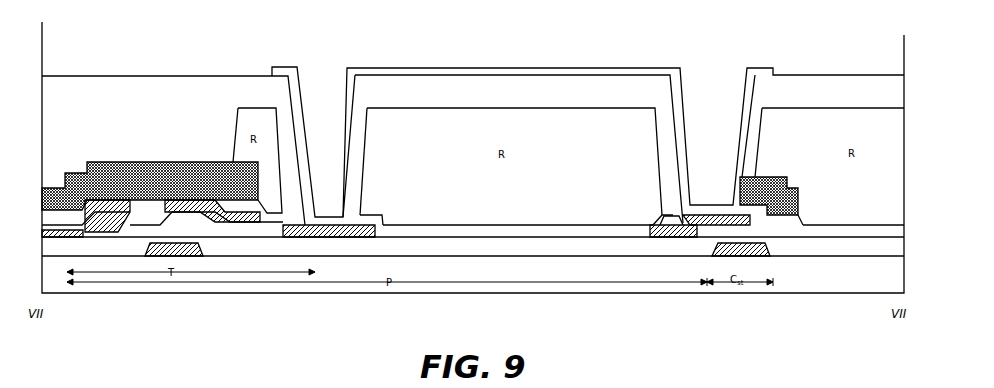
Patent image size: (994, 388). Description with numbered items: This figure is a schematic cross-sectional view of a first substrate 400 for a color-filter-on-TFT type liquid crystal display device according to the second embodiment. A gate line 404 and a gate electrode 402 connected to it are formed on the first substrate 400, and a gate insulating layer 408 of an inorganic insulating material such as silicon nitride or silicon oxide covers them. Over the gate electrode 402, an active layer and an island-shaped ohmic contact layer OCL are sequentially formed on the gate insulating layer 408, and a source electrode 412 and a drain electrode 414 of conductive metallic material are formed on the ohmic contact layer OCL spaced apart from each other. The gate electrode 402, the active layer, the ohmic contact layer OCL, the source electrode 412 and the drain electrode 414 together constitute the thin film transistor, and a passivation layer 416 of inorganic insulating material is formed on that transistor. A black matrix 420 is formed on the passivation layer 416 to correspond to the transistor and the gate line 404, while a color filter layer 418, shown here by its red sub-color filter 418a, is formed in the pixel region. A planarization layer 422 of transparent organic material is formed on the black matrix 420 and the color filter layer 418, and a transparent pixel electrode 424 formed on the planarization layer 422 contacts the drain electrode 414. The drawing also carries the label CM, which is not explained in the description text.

The first substrate 400 is at (473, 157).
The gate electrode 402 is at (157, 259).
The gate line 404 is at (722, 258).
The gate insulating layer 408 is at (445, 248).
The source electrode 412 is at (118, 160).
The drain electrode 414 is at (213, 197).
The passivation layer 416 is at (147, 158).
The color filter layer 418 is at (245, 232).
The red sub-color filter 418a is at (252, 107).
The black matrix 420 is at (175, 160).
The planarization layer 422 is at (546, 75).
The pixel electrode 424 is at (388, 67).
The ohmic contact layer OCL is at (108, 233).
The common line CM is at (676, 240).